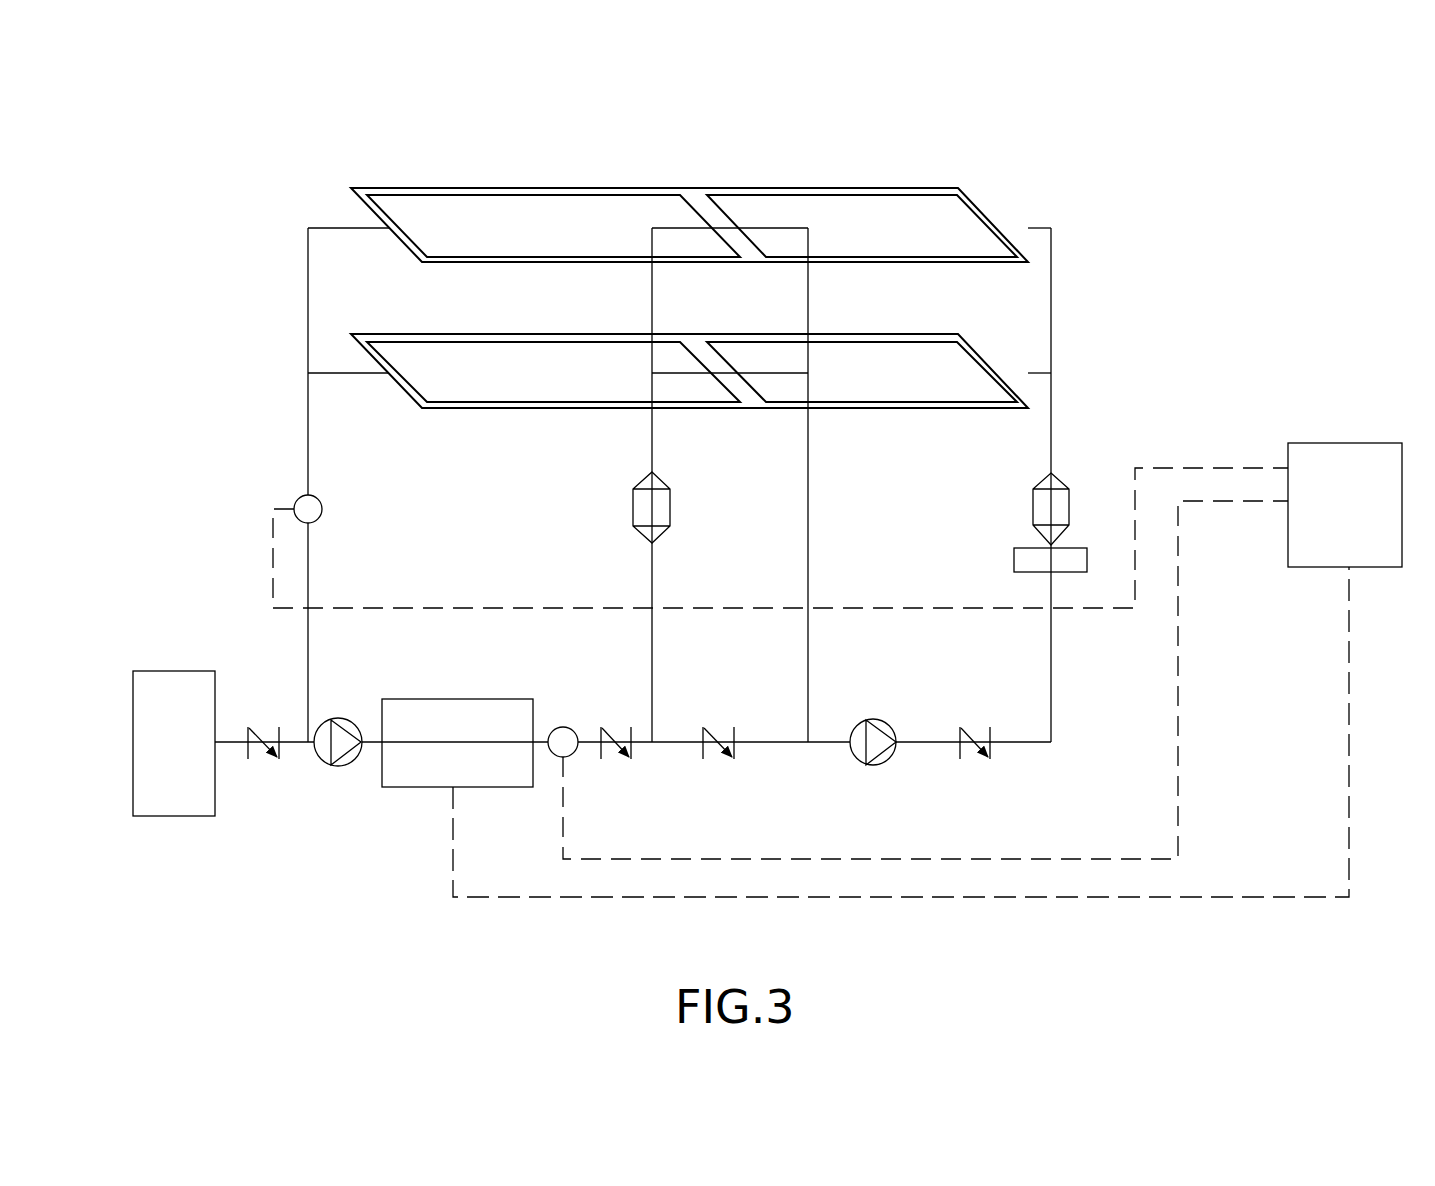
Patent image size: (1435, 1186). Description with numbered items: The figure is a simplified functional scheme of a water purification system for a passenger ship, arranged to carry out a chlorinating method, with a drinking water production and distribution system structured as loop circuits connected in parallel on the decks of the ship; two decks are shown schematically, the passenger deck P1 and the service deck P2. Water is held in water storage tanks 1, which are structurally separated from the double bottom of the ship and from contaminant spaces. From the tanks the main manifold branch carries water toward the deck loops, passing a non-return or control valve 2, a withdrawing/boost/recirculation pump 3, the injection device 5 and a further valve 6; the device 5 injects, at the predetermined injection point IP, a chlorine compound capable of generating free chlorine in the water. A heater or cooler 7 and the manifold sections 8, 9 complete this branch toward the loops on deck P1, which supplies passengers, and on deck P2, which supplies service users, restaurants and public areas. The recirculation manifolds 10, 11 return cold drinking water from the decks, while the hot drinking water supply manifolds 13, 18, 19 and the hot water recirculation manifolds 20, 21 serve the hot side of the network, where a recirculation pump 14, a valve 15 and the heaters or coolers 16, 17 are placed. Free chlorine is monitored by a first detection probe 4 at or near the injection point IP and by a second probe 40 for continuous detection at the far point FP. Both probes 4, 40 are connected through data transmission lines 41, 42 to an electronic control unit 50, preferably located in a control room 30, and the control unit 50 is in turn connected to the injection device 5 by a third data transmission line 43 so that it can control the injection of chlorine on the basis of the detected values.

The water storage tanks 1 is at (165, 752).
The control valve/non-return valve 2 is at (279, 758).
The withdrawing/boost/recirculation pump 3 is at (338, 766).
The first detection probe 4 is at (570, 728).
The injection device 5 is at (448, 756).
The control valve/non-return valve 6 is at (631, 758).
The heater/cooler 7 is at (633, 507).
The main manifold branch 8 is at (682, 377).
The main manifold branch 9 is at (670, 228).
The recirculation manifold of cold drinking water 10 is at (340, 226).
The recirculation manifold of cold drinking water 11 is at (335, 372).
The control valve/non-return valve 13 is at (734, 758).
The withdrawing/boost/recirculation pump 14 is at (870, 765).
The control valve/non-return valve 15 is at (990, 758).
The heater/cooler 16 is at (1014, 560).
The heater/cooler 17 is at (1069, 507).
The supply manifold of hot drinking water 18 is at (1015, 372).
The supply manifold of hot drinking water 19 is at (1030, 228).
The recirculation manifold of hot drinking water 20 is at (790, 228).
The recirculation manifold of hot drinking water 21 is at (787, 377).
The control room 30 is at (1345, 435).
The second probe 40 is at (322, 509).
The data transmission line 41 is at (1088, 859).
The data transmission line 42 is at (440, 607).
The third data transmission line 43 is at (900, 898).
The electronic control unit 50 is at (1329, 522).
The far point FP is at (304, 475).
The injection point IP is at (568, 695).
The passenger deck P1 is at (885, 228).
The service deck P2 is at (903, 375).